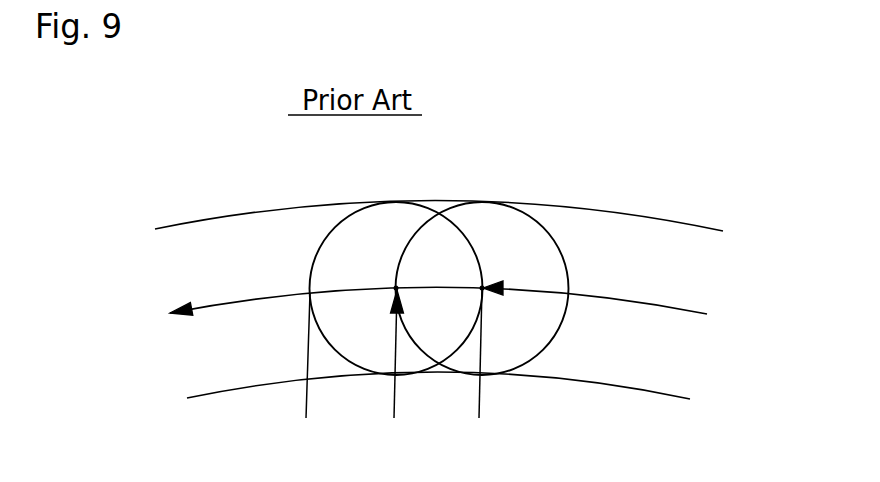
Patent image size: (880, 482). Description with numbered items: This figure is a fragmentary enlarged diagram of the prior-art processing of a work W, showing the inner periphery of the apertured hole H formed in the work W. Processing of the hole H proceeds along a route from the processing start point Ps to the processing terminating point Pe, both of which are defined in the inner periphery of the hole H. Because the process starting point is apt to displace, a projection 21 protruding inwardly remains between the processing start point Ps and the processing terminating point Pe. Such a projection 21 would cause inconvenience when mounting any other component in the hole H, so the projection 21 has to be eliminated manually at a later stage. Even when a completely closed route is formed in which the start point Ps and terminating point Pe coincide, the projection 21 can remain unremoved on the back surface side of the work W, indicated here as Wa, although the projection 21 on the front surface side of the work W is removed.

The apertured hole H is at (232, 220).
The processing start point Ps is at (396, 288).
The processing terminating point Pe is at (483, 287).
The projection 21 is at (438, 207).
The work W is at (663, 213).
The wafer edge Wa is at (623, 397).